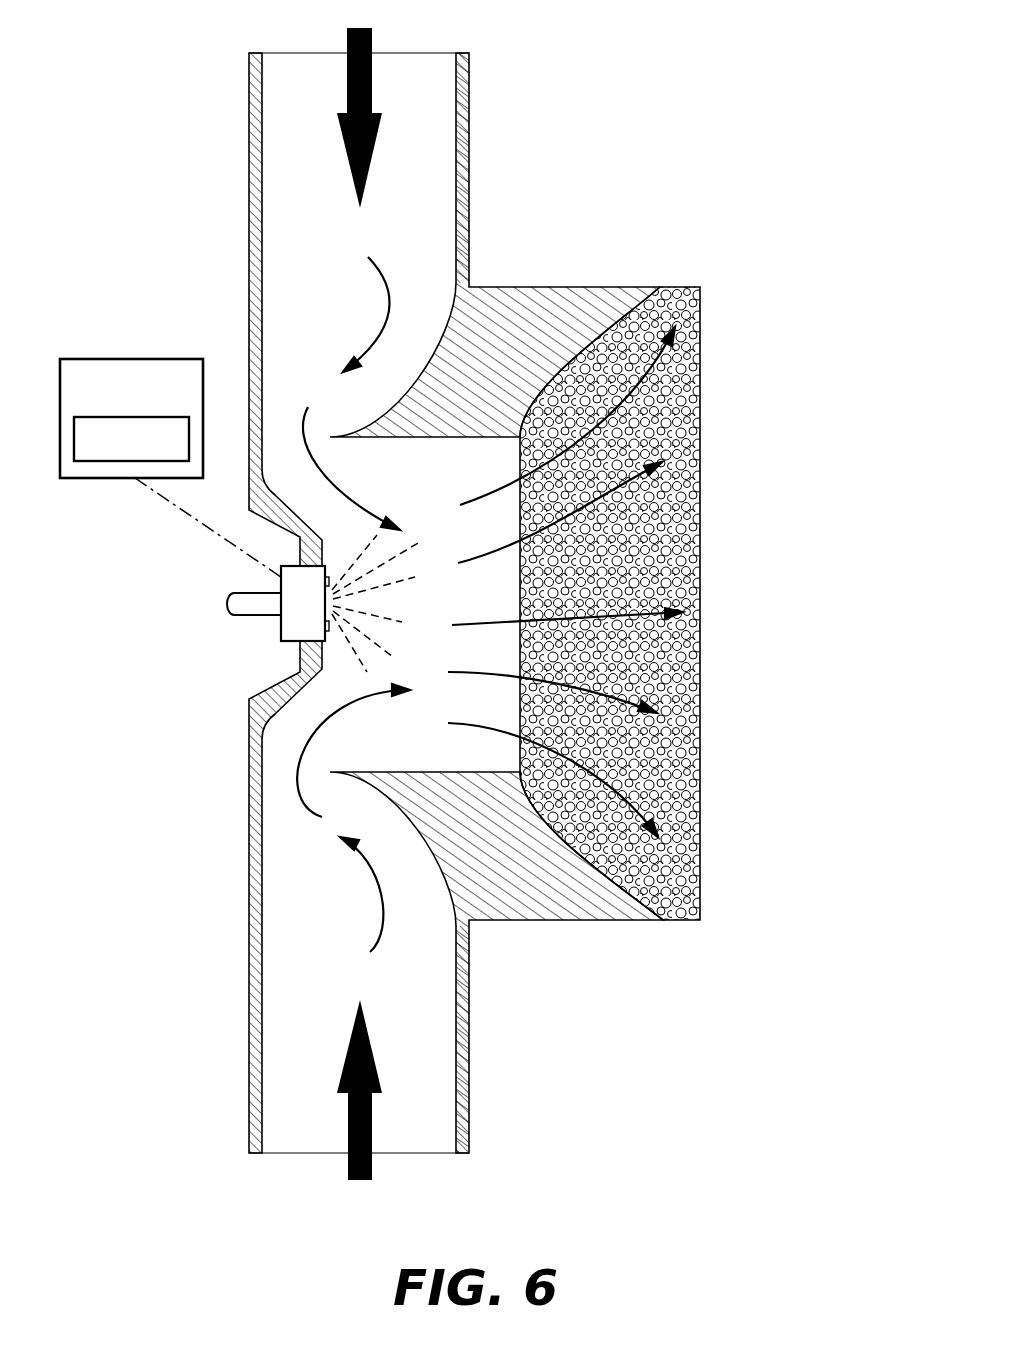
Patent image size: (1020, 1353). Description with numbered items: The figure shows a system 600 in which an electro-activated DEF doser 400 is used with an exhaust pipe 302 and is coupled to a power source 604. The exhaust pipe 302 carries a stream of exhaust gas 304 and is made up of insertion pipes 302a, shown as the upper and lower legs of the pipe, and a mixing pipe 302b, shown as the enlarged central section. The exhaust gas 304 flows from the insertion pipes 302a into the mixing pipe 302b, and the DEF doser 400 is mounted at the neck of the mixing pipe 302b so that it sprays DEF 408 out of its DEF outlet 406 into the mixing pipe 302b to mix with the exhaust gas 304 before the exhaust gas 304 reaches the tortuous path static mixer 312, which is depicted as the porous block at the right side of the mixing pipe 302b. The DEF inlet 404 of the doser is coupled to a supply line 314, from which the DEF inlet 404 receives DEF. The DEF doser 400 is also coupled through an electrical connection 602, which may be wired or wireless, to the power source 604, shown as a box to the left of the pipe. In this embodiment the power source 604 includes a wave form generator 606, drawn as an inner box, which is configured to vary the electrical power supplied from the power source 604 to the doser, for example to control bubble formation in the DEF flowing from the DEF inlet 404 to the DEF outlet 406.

The system 600 is at (722, 40).
The exhaust pipe 302 is at (470, 125).
The insertion pipes 302a is at (293, 162).
The mixing pipe 302b is at (480, 457).
The exhaust gas 304 is at (372, 40).
The tortuous path static mixer 312 is at (687, 483).
The supply line 314 is at (230, 595).
The DEF doser 400 is at (283, 632).
The DEF inlet 404 is at (275, 618).
The DEF outlet 406 is at (345, 598).
The DEF 408 is at (378, 647).
The electrical connection 602 is at (183, 513).
The power source 604 is at (138, 359).
The wave form generator 606 is at (108, 455).